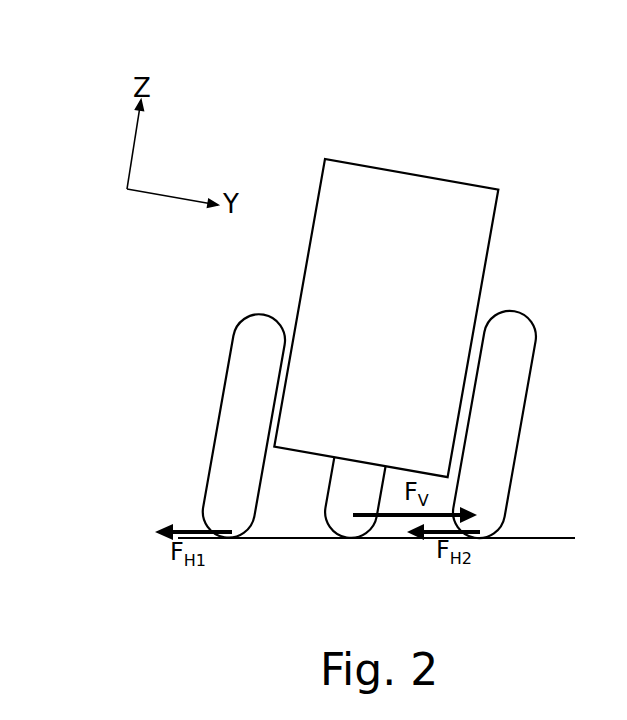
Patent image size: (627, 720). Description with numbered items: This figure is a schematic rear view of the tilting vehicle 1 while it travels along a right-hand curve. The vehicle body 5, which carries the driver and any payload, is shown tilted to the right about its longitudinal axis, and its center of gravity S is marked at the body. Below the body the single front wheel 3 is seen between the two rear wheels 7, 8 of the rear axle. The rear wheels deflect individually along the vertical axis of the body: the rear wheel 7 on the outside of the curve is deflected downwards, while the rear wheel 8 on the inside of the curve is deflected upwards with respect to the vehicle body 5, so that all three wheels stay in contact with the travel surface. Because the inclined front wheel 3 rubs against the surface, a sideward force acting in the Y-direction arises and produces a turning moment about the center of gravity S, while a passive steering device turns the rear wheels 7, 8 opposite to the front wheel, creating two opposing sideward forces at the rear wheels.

The vehicle 1 is at (474, 87).
The front wheel 3 is at (345, 498).
The vehicle body 5 is at (494, 222).
The rear wheel 7 is at (228, 437).
The rear wheel 8 is at (508, 372).
The vehicle center of gravity S is at (325, 159).